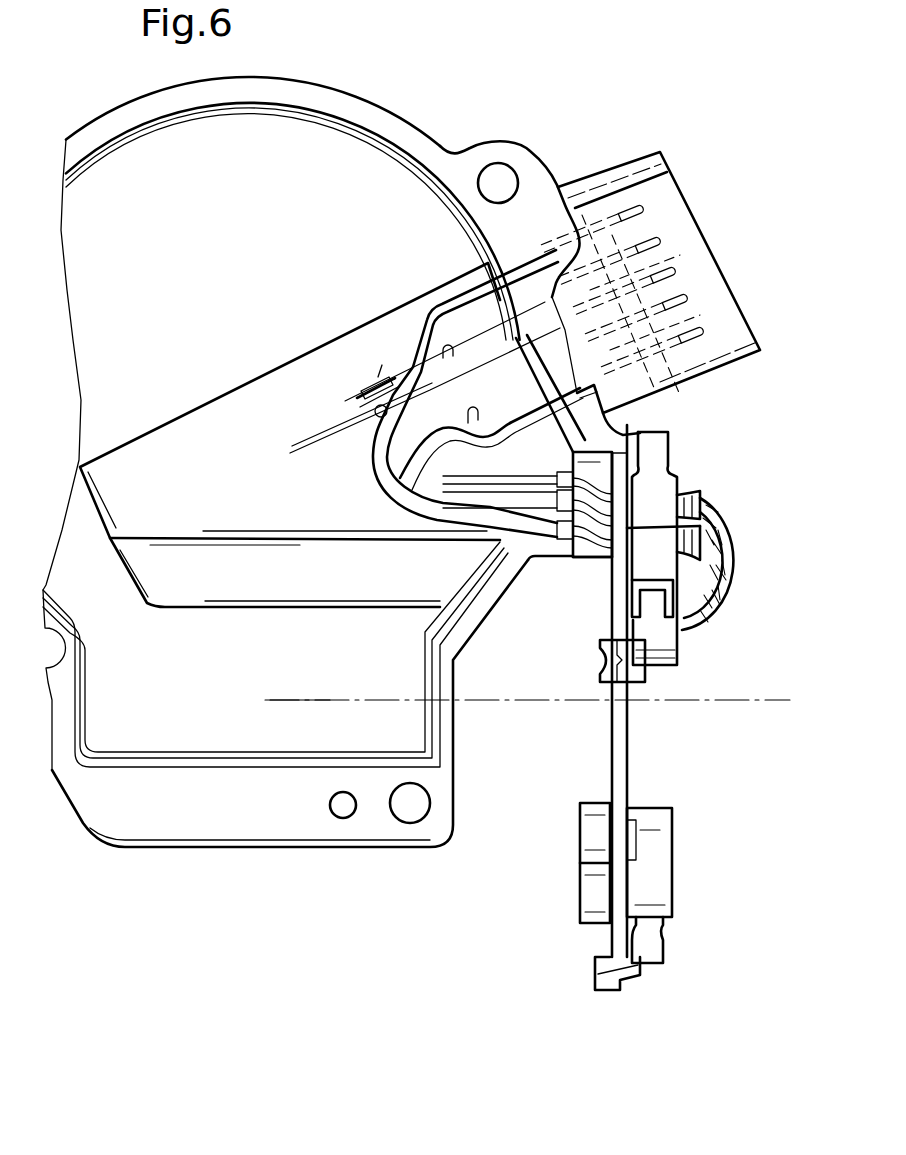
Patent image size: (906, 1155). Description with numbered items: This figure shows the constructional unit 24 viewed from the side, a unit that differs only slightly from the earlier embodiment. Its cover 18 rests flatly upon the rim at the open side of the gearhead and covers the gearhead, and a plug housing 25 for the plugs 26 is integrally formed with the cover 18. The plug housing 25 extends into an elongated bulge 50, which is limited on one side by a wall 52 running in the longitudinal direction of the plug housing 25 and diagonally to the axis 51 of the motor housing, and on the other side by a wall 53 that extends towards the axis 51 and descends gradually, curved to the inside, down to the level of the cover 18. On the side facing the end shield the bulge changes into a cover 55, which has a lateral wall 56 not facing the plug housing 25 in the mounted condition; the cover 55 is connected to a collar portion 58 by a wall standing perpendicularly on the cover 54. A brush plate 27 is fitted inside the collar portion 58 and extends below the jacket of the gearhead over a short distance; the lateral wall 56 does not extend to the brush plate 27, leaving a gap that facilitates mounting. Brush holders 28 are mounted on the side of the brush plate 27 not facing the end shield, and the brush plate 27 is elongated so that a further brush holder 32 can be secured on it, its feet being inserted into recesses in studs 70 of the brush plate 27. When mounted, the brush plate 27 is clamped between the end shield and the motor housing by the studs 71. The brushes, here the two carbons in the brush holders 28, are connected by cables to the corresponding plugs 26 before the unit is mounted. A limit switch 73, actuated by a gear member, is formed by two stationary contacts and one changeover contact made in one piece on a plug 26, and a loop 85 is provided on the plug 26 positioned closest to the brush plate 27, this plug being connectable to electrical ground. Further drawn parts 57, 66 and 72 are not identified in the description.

The cover 18 is at (210, 822).
The constructional part 24 is at (370, 84).
The plug housing 25 is at (657, 190).
The plugs 26 is at (693, 297).
The brush plate 27 is at (620, 777).
The brush holders 28 is at (678, 485).
The brush holder 32 is at (660, 860).
The elongated bulge 50 is at (166, 432).
The axis 51 is at (750, 702).
The wall 52 is at (228, 392).
The wall 53 is at (238, 596).
The cover 54 is at (223, 509).
The cover 55 is at (537, 535).
The lateral wall 56 is at (552, 552).
The block 57 is at (665, 490).
The collar portion 58 is at (628, 422).
The bottom of block 66 is at (580, 560).
The studs 70 is at (590, 845).
The studs 71 is at (633, 672).
The tubes 72 is at (420, 507).
The limit switch 73 is at (370, 342).
The loop 85 is at (566, 410).